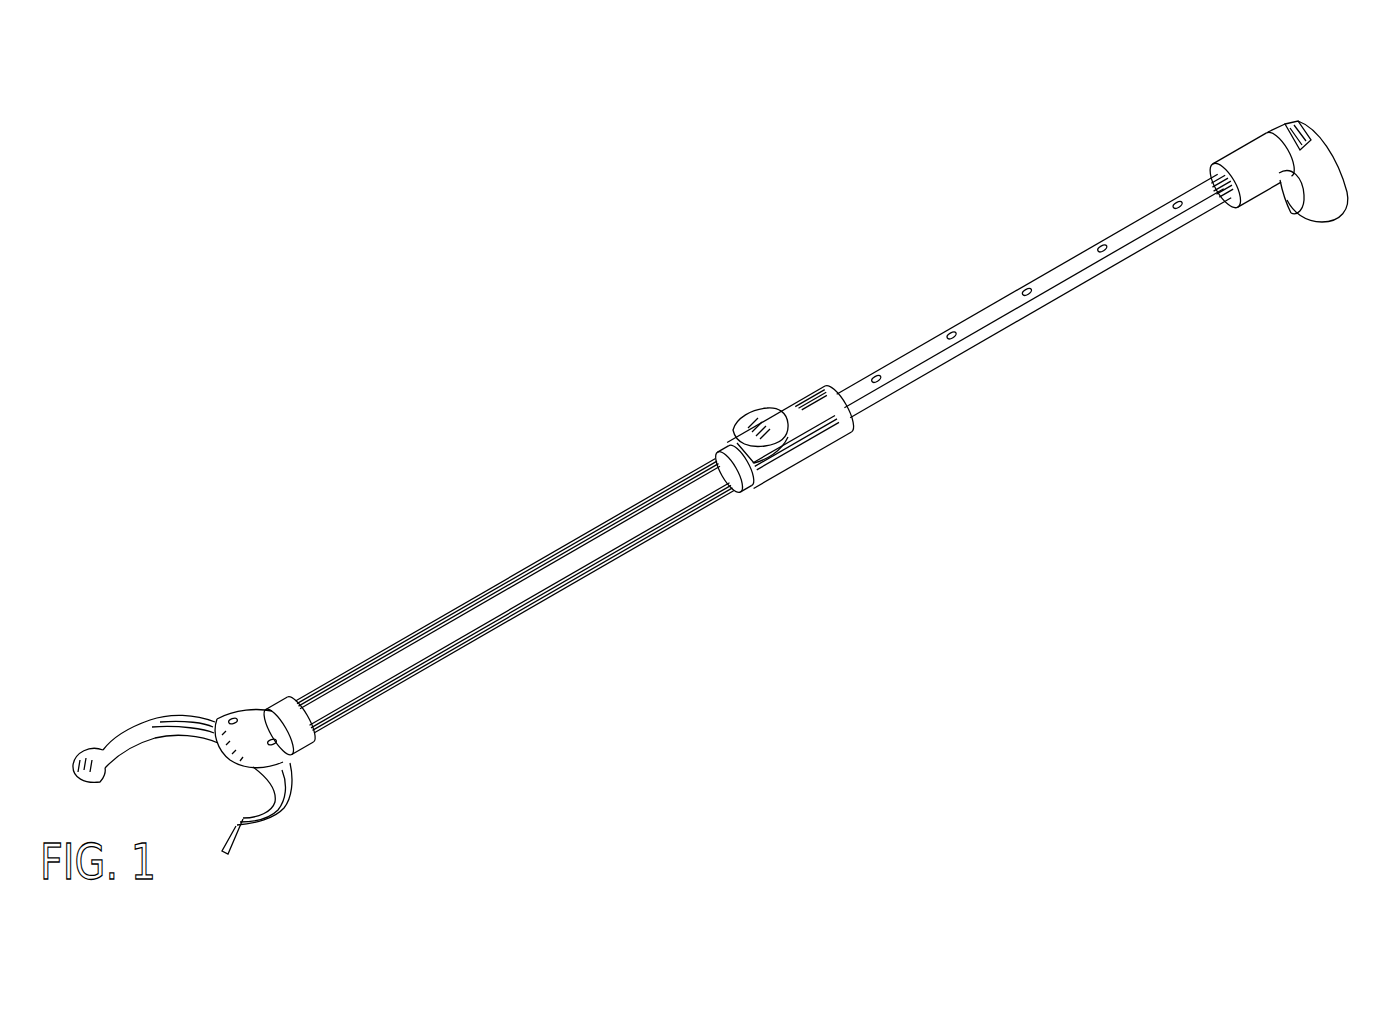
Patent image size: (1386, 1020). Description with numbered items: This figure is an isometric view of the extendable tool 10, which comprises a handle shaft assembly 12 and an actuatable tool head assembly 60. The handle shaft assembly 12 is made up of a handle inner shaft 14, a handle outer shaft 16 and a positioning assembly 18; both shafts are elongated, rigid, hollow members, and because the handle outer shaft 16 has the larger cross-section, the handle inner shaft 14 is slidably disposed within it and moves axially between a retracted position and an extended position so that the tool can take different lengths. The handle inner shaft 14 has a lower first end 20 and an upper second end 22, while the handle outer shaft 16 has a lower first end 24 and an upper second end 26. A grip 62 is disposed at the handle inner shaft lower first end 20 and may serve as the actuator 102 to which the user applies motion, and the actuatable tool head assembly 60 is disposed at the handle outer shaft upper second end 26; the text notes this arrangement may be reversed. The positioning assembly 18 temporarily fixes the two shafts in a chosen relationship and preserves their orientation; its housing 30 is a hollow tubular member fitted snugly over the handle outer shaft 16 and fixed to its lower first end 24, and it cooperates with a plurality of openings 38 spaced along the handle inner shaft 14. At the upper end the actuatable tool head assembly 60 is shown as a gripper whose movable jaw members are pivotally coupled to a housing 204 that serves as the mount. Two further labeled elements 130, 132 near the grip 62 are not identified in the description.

The extendable tool 10 is at (483, 360).
The handle shaft assembly 12 is at (514, 595).
The handle inner shaft 14 is at (1034, 304).
The handle outer shaft 16 is at (453, 650).
The positioning assembly 18 is at (757, 400).
The handle inner shaft lower first end 20 is at (1210, 175).
The handle inner shaft upper second end 22 is at (836, 388).
The handle outer shaft lower first end 24 is at (722, 487).
The handle outer shaft upper second end 26 is at (313, 733).
The positioning assembly housing 30 is at (815, 447).
The plurality of openings 38 is at (881, 379).
The actuatable tool head assembly 60 is at (190, 690).
The grip 62 is at (1310, 247).
The actuator 102 is at (1300, 118).
The grip 130 is at (1336, 150).
The grip opening 132 is at (1308, 215).
The actuatable tool head assembly housing 204 is at (227, 714).